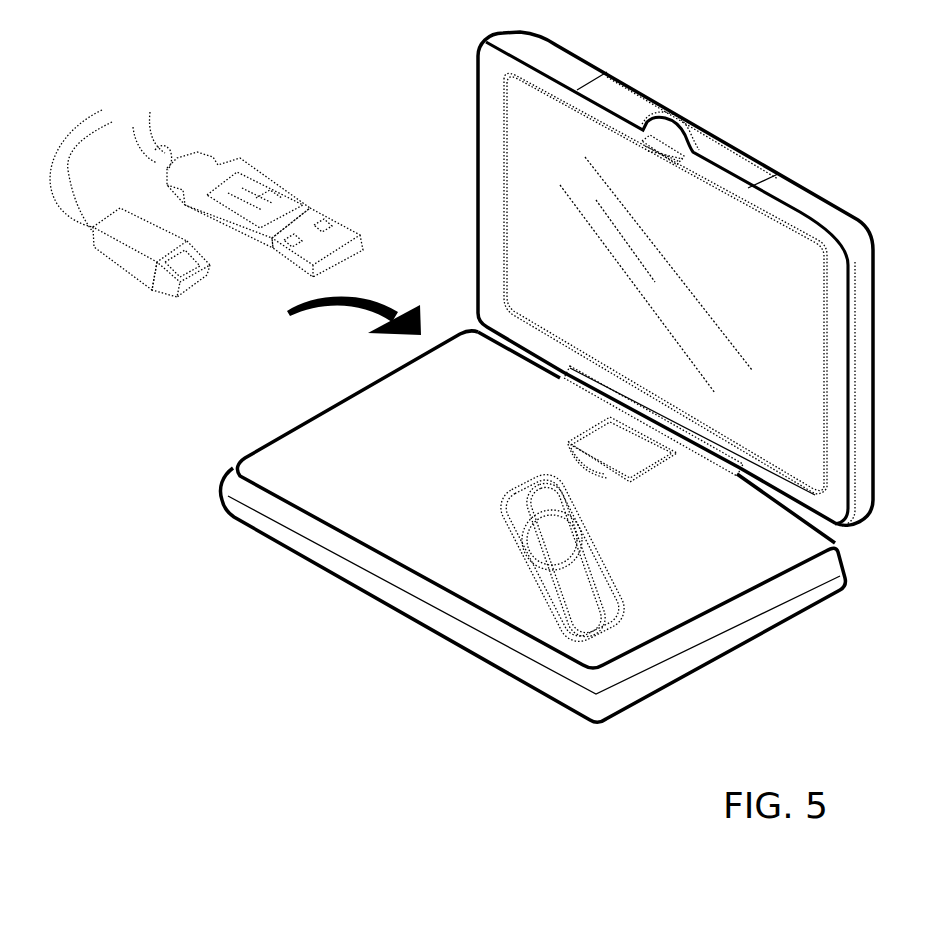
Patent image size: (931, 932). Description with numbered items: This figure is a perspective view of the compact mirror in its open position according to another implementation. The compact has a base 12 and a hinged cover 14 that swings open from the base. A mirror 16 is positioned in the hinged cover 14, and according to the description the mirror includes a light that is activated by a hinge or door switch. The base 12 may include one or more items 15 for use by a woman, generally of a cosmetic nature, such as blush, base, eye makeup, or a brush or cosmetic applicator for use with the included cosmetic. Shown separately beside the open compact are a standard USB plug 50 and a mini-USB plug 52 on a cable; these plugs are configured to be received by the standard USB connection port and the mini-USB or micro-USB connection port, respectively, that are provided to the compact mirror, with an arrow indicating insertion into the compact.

The base 12 is at (383, 538).
The hinged cover 14 is at (742, 168).
The items 15 is at (613, 453).
The mirror 16 is at (527, 169).
The standard USB plug 50 is at (270, 207).
The mini-USB plug 52 is at (133, 252).